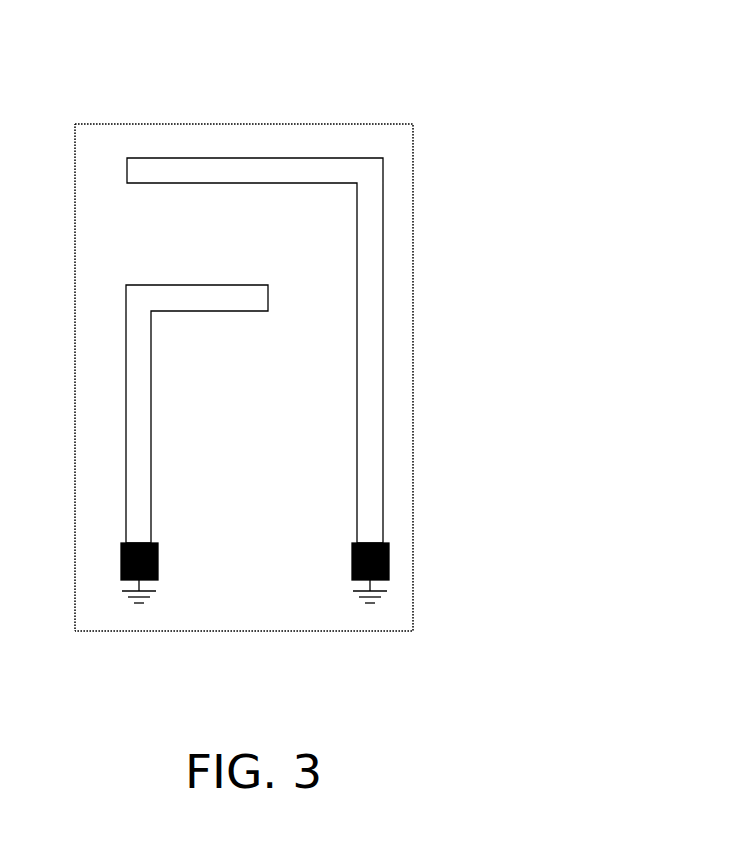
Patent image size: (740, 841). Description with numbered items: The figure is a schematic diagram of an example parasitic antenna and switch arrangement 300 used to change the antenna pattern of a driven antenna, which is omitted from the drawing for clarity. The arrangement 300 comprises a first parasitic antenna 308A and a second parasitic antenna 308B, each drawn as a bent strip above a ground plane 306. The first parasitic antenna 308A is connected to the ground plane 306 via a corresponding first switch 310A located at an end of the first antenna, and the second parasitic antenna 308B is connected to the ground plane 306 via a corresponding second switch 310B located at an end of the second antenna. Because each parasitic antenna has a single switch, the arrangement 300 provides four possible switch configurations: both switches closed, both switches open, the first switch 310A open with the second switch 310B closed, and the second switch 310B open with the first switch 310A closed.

The parasitic antenna and switch arrangement 300 is at (178, 70).
The ground plane 306 is at (271, 601).
The first parasitic antenna 308A is at (357, 210).
The second parasitic antenna 308B is at (140, 285).
The first switch 310A is at (353, 543).
The second switch 310B is at (157, 543).